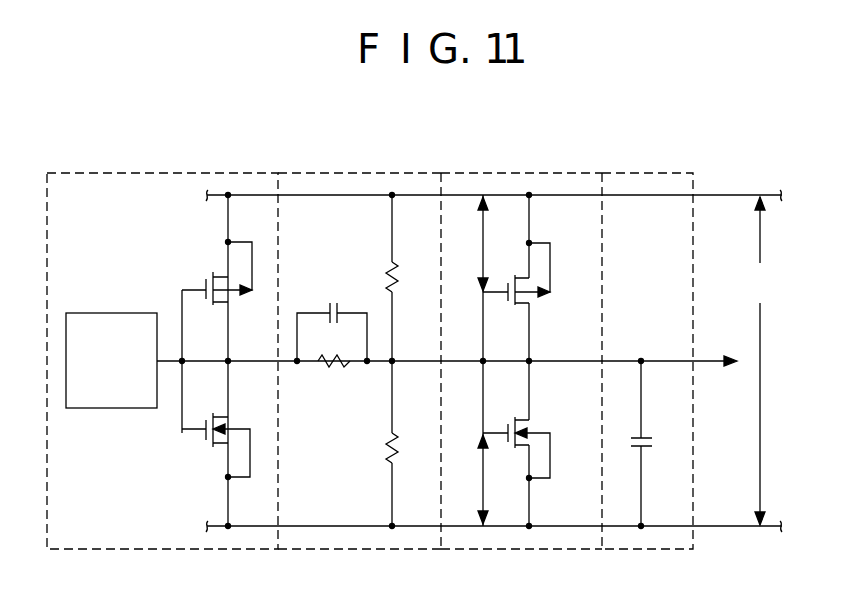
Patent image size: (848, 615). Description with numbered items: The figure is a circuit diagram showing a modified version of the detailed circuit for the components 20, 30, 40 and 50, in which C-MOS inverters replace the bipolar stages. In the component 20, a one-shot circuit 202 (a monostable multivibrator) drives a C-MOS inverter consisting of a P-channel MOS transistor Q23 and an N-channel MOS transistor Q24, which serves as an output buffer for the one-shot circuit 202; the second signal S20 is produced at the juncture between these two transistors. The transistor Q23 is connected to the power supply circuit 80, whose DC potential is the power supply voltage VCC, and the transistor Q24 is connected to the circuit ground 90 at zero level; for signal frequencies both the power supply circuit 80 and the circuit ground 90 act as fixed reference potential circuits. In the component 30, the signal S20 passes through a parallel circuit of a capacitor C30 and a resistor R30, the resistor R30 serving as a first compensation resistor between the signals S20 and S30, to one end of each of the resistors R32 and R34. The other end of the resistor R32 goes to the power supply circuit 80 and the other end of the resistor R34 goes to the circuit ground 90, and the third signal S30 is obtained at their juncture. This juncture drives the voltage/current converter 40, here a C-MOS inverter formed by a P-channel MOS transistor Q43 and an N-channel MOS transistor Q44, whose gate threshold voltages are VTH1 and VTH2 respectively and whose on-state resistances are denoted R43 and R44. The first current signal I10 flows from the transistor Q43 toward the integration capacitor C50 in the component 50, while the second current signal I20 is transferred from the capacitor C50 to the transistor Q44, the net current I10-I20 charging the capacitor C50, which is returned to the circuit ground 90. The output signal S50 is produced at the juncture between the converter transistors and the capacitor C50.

The component 20 is at (165, 180).
The component 30 is at (345, 180).
The voltage/current converter 40 is at (510, 180).
The component 50 is at (665, 158).
The power supply circuit 80 is at (718, 193).
The circuit ground 90 is at (725, 528).
The one-shot circuit 202 is at (108, 313).
The P-channel MOS transistor Q23 is at (207, 276).
The N-channel MOS transistor Q24 is at (203, 440).
The resistor R32 is at (381, 276).
The resistor R34 is at (381, 448).
The first compensation resistor R30 is at (335, 367).
The capacitor C30 is at (331, 307).
The P-channel MOS transistor Q43 is at (555, 258).
The N-channel MOS transistor Q44 is at (550, 470).
The on-state resistance of transistor Q43 R43 is at (579, 270).
The on-state resistance of transistor Q44 R44 is at (579, 453).
The integration capacitor C50 is at (651, 444).
The second signal S20 is at (228, 361).
The third signal S30 is at (392, 361).
The output signal S50 is at (567, 350).
The first current signal I10 is at (565, 348).
The second current signal I20 is at (575, 375).
The current I10/I20 I10-I20 is at (621, 359).
The gate threshold voltage of transistor Q43 VTH1 is at (488, 279).
The gate threshold voltage of transistor Q44 VTH2 is at (485, 443).
The power supply voltage VCC is at (759, 361).